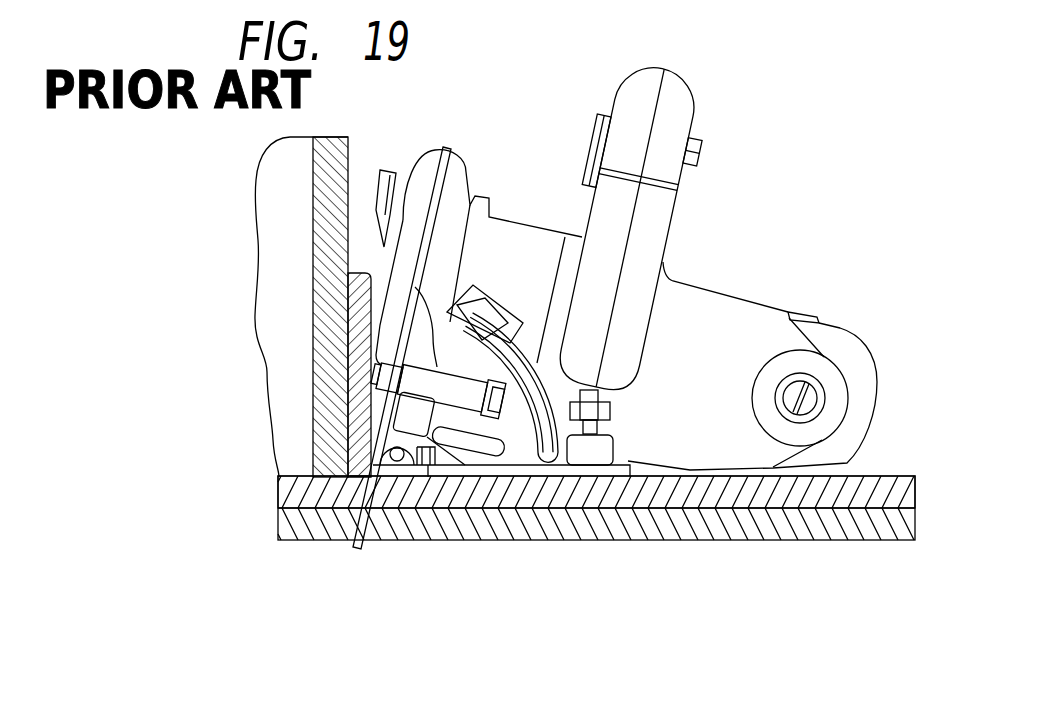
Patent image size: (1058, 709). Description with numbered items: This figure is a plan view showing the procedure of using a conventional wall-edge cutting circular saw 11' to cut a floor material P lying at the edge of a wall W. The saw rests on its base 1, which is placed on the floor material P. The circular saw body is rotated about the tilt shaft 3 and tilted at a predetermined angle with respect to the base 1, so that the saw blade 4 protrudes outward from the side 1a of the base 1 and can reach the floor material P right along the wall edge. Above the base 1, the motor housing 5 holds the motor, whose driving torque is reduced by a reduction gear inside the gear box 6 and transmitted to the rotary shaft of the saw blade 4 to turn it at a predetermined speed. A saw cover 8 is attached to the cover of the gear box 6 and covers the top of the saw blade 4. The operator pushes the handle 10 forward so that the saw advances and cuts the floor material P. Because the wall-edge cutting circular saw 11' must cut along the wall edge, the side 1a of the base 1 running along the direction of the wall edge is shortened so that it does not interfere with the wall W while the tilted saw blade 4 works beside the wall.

The wall W is at (347, 140).
The floor material P is at (895, 478).
The base 1 is at (557, 472).
The side of the base 1a is at (354, 466).
The tilt shaft 3 is at (405, 482).
The saw blade 4 is at (397, 461).
The motor housing 5 is at (750, 308).
The gear box 6 is at (512, 225).
The saw cover 8 is at (460, 168).
The handle 10 is at (682, 110).
The wall-edge cutting circular saw 11' is at (615, 333).